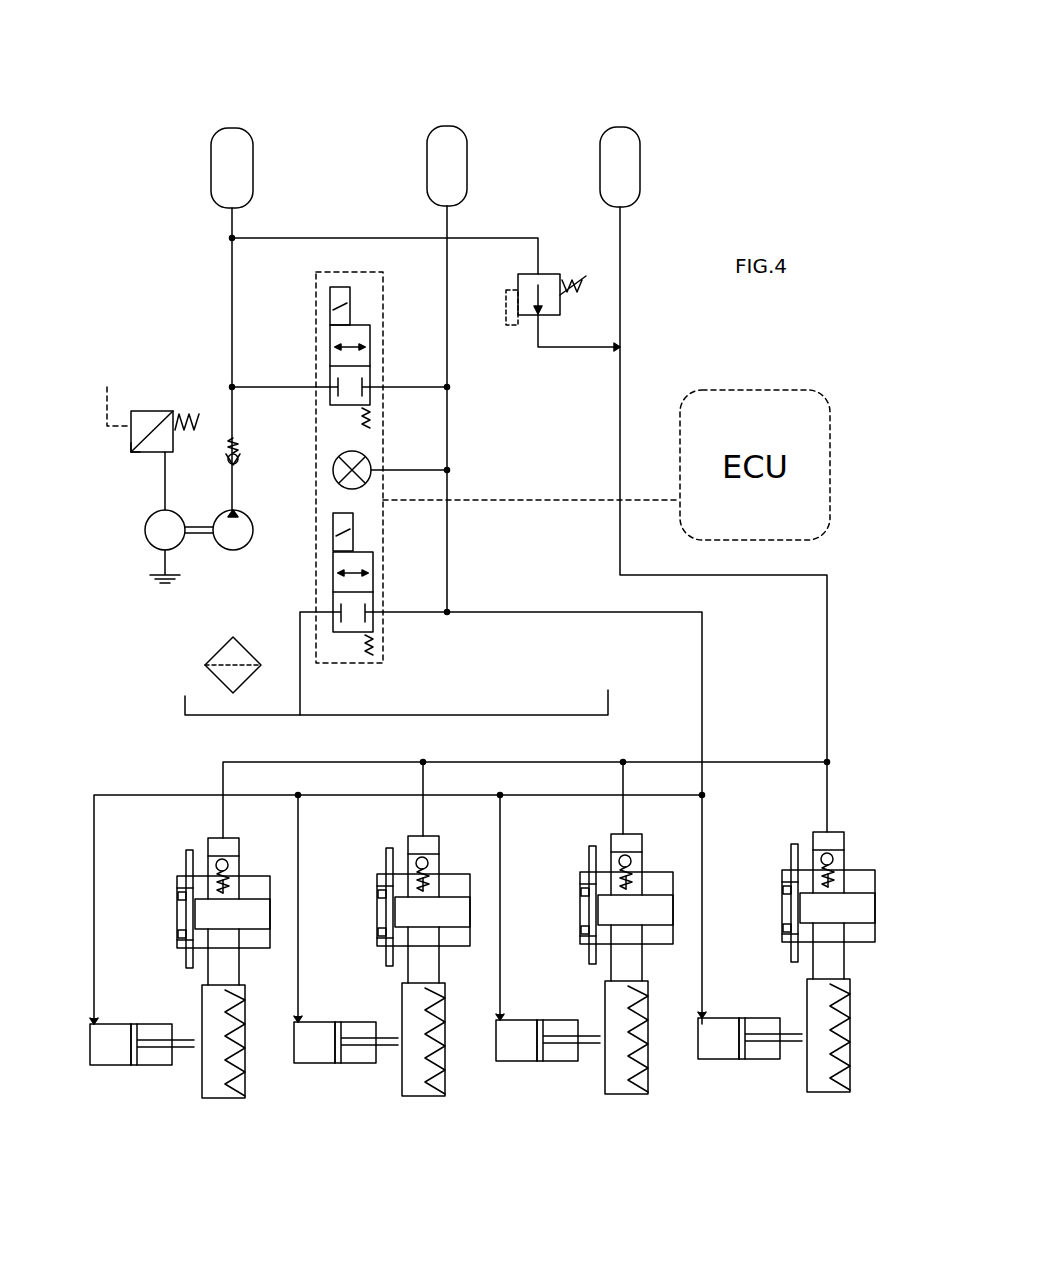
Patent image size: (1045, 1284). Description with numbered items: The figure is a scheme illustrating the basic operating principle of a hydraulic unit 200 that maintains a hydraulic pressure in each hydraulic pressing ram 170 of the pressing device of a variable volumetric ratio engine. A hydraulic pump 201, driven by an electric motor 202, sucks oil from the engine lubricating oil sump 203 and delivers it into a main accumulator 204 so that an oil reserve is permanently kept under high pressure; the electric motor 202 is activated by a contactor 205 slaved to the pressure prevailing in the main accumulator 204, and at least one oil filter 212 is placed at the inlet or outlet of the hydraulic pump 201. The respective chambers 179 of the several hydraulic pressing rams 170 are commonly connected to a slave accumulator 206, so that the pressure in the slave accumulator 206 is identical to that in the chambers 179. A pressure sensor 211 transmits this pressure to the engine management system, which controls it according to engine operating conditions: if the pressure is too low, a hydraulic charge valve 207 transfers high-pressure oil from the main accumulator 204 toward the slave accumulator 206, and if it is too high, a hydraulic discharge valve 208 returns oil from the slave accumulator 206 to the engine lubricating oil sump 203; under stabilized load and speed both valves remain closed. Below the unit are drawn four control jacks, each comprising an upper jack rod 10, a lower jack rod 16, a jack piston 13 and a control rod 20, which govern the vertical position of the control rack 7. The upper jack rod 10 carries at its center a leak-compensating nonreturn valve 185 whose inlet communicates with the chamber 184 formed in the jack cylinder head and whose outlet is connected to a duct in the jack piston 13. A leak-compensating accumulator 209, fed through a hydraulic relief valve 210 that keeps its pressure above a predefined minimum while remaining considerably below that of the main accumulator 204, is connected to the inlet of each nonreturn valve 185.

The hydraulic unit 200 is at (744, 172).
The hydraulic pump 201 is at (230, 542).
The electric motor 202 is at (150, 520).
The engine lubricating oil sump 203 is at (245, 720).
The main accumulator 204 is at (232, 128).
The contactor 205 is at (150, 430).
The slave accumulator 206 is at (447, 126).
The hydraulic charge valve 207 is at (360, 340).
The hydraulic discharge valve 208 is at (373, 604).
The leak-compensating accumulator 209 is at (620, 127).
The hydraulic relief valve 210 is at (546, 288).
The pressure sensor 211 is at (336, 461).
The oil filter 212 is at (212, 664).
The chamber 184 is at (502, 831).
The leak-compensating nonreturn valve 185 is at (552, 851).
The upper jack rod 10 is at (559, 864).
The jack piston 13 is at (541, 909).
The lower jack rod 16 is at (554, 963).
The control rod 20 is at (462, 906).
The chamber 179 is at (100, 1045).
The hydraulic pressing ram 170 is at (133, 1068).
The control rack 7 is at (243, 1100).